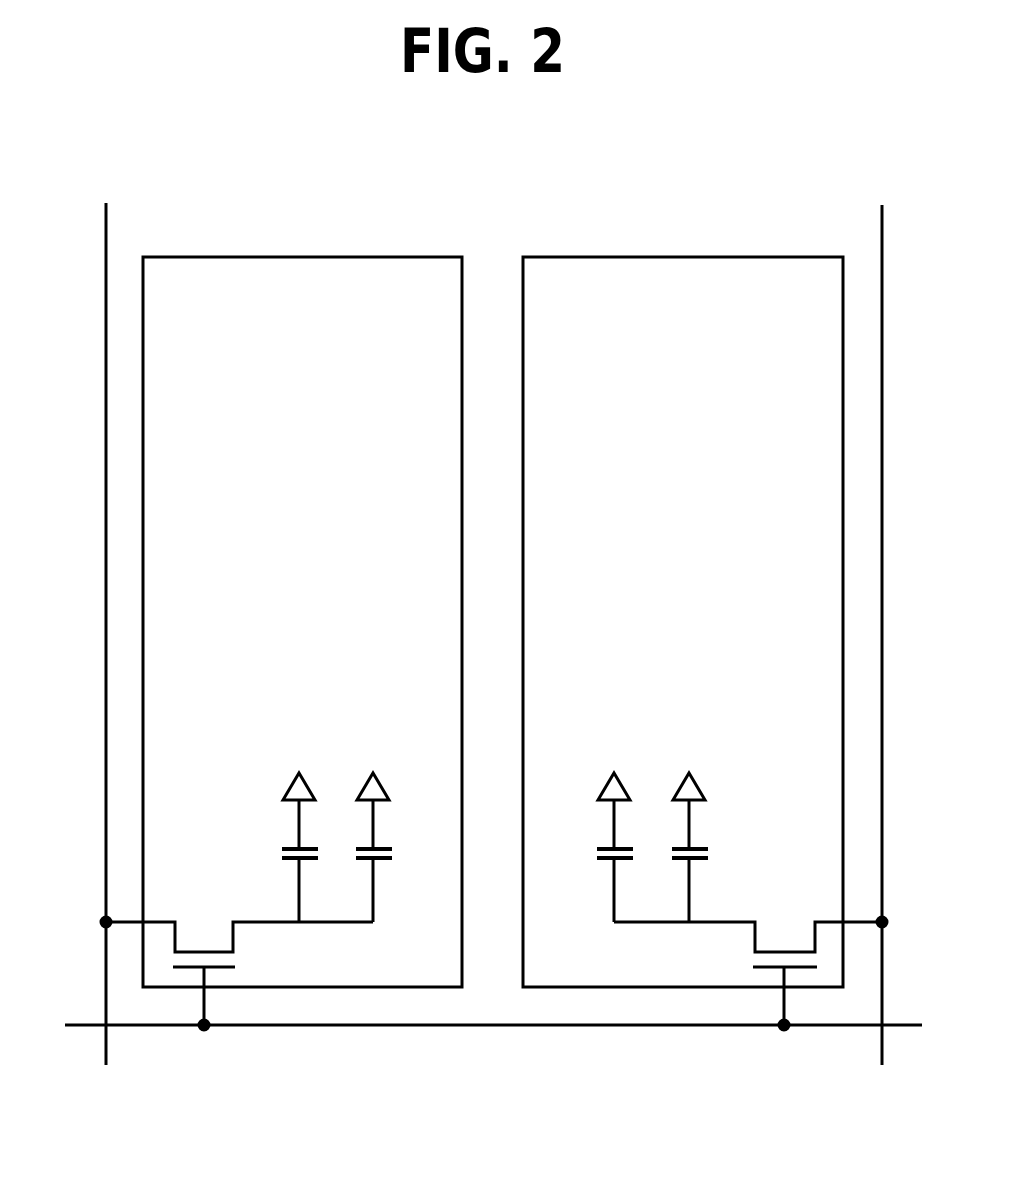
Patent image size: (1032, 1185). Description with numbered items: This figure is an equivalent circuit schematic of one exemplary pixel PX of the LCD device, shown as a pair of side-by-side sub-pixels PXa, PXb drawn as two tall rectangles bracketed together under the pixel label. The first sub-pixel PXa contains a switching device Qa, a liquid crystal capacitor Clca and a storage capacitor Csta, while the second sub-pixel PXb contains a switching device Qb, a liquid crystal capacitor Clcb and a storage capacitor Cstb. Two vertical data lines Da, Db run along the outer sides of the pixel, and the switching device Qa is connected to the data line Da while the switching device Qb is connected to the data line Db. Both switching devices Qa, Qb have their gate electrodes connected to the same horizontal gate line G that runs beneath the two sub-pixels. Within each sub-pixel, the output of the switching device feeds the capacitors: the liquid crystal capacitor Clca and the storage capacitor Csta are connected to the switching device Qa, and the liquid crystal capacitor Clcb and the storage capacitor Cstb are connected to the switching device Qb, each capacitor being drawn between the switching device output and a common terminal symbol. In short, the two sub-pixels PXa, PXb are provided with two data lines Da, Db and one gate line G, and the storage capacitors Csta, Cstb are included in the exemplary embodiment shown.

The pixel PX is at (572, 152).
The sub-pixel PXa is at (420, 256).
The sub-pixel PXb is at (563, 256).
The data line Da is at (105, 614).
The data line Db is at (882, 614).
The gate line G is at (482, 1026).
The switching device Qa is at (239, 973).
The switching device Qb is at (748, 973).
The liquid crystal capacitor Clca is at (271, 847).
The storage capacitor Csta is at (400, 847).
The storage capacitor Cstb is at (587, 847).
The liquid crystal capacitor Clcb is at (716, 847).